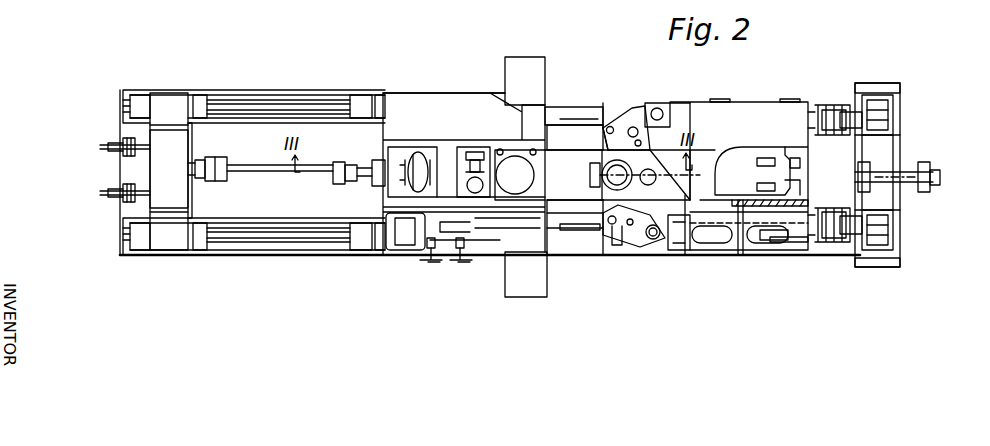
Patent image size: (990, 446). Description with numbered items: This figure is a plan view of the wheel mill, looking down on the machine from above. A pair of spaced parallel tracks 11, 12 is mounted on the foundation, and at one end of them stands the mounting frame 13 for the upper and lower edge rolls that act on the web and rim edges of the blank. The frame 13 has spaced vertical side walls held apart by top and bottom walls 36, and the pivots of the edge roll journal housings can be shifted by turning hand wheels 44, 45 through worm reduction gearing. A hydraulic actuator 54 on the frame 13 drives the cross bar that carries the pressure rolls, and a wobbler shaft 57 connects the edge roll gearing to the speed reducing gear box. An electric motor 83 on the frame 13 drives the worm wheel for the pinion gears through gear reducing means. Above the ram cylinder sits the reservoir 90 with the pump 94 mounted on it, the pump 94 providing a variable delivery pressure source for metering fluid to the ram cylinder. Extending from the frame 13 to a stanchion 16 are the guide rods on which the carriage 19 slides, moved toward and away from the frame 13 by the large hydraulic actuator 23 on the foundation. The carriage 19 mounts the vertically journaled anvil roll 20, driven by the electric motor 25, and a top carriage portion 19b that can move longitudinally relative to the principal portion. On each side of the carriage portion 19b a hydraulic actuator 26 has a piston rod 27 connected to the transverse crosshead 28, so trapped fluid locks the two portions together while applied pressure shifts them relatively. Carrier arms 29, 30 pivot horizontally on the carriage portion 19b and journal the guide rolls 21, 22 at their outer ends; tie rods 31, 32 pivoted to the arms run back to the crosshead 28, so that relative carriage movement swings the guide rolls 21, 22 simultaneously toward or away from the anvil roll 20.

The track 11 is at (290, 237).
The track 12 is at (290, 100).
The mounting frame 13 is at (440, 147).
The stanchion 16 is at (890, 152).
The carriage 19 is at (769, 84).
The carriage portion 19b is at (713, 247).
The anvil roll 20 is at (607, 174).
The guide roll 21 is at (612, 126).
The guide roll 22 is at (610, 255).
The hydraulic actuator 23 is at (907, 177).
The electric motor 25 is at (737, 168).
The hydraulic actuator 26 is at (788, 252).
The piston rod 27 is at (833, 245).
The crosshead 28 is at (837, 108).
The carrier arm 29 is at (638, 108).
The carrier arm 30 is at (641, 258).
The tie rod 31 is at (660, 103).
The tie rod 32 is at (678, 258).
The top and bottom walls 36 is at (442, 197).
The hand wheel 44 is at (430, 263).
The hand wheel 45 is at (460, 263).
The hydraulic actuator 54 is at (355, 162).
The wobbler shaft 57 is at (248, 168).
The electric motor 83 is at (388, 257).
The reservoir 90 is at (548, 102).
The pump 94 is at (475, 150).